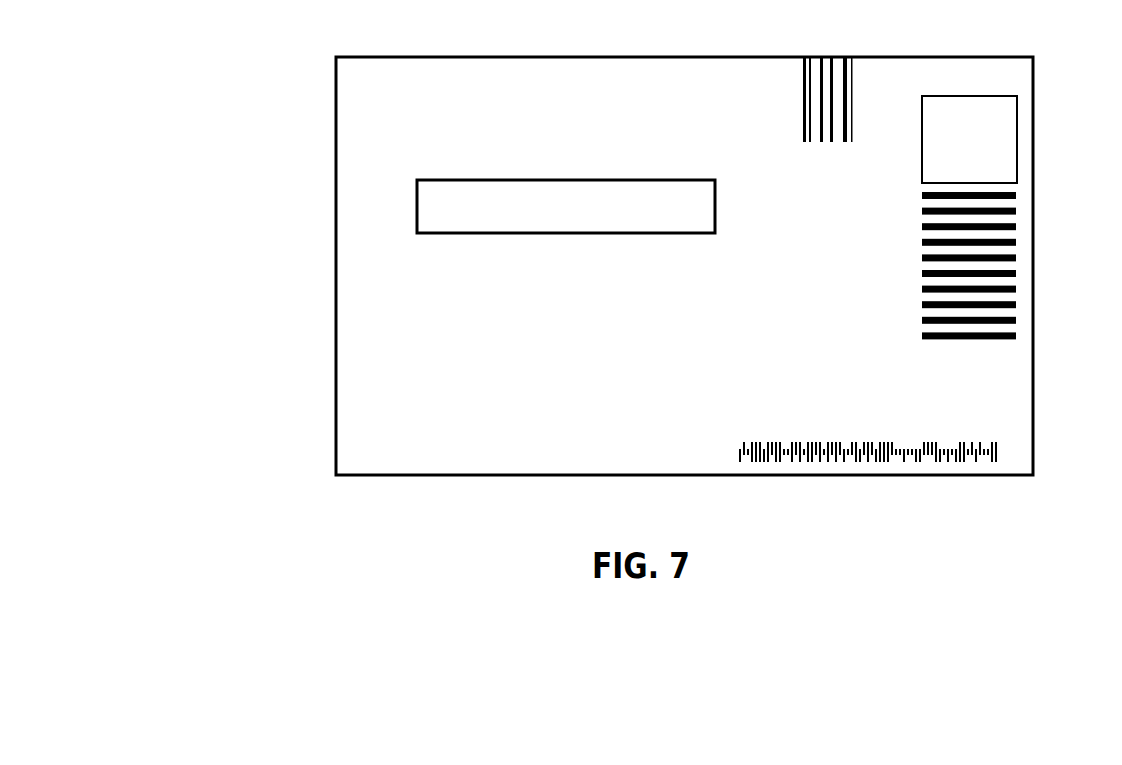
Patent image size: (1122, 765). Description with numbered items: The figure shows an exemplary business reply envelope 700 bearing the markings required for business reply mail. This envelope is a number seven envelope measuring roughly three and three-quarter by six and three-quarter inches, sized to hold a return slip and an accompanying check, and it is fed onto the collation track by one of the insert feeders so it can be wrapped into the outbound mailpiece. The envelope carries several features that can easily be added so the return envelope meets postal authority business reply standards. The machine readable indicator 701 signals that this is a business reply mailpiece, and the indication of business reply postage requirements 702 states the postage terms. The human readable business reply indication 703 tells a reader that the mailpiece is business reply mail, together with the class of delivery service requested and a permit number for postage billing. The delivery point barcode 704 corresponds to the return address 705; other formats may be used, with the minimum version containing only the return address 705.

The business reply envelope 700 is at (328, 300).
The machine readable indicator 701 is at (1003, 293).
The indication of business reply postage requirements 702 is at (922, 143).
The human readable business reply indication 703 is at (600, 177).
The delivery point barcode 704 is at (887, 435).
The return address 705 is at (453, 348).